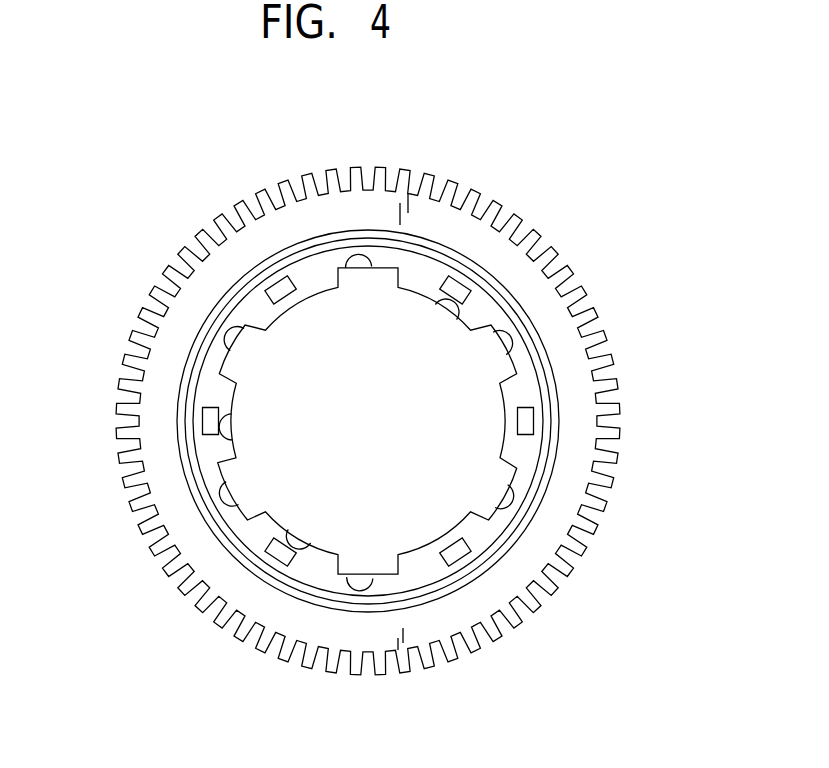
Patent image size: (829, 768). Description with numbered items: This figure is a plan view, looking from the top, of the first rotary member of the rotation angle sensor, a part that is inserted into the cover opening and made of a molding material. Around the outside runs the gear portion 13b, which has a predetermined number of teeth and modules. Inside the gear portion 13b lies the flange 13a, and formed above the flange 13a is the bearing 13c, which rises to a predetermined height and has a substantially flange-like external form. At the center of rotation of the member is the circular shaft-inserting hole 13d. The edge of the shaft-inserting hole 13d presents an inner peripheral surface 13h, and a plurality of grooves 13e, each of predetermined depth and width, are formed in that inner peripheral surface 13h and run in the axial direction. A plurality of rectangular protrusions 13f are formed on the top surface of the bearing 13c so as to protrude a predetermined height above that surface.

The flange 13a is at (575, 370).
The gear portion 13b is at (598, 446).
The bearing 13c is at (416, 277).
The shaft-inserting hole 13d is at (403, 498).
The grooves 13e is at (344, 264).
The rectangular protrusions 13f is at (277, 288).
The inner peripheral surface 13h is at (494, 330).